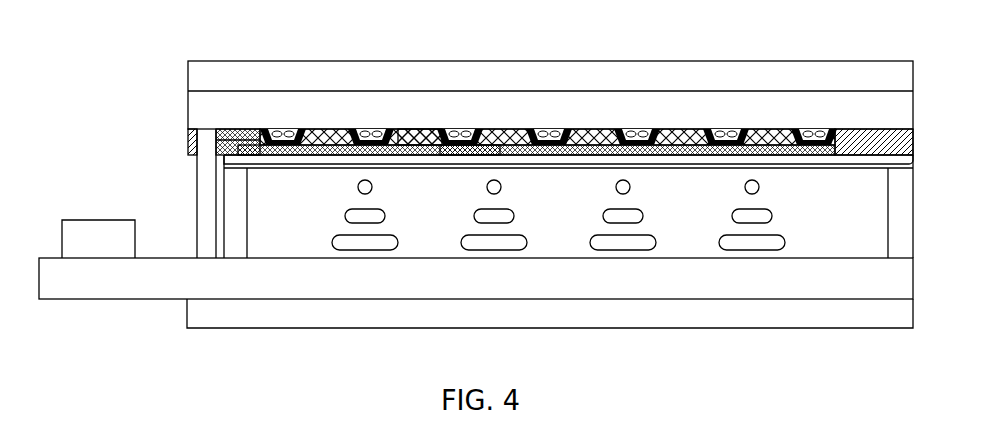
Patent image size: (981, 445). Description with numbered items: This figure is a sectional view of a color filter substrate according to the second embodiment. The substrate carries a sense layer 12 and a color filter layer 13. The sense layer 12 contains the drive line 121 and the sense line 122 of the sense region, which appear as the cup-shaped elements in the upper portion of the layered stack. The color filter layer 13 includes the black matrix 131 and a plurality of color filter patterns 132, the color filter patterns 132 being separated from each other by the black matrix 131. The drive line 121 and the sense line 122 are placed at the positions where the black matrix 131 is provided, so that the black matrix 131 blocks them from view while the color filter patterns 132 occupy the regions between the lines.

The sense layer 12 is at (548, 86).
The drive line 121 is at (283, 134).
The sense line 122 is at (368, 134).
The color filter layer 13 is at (568, 91).
The black matrix 131 is at (482, 134).
The color filter patterns 132 is at (420, 139).